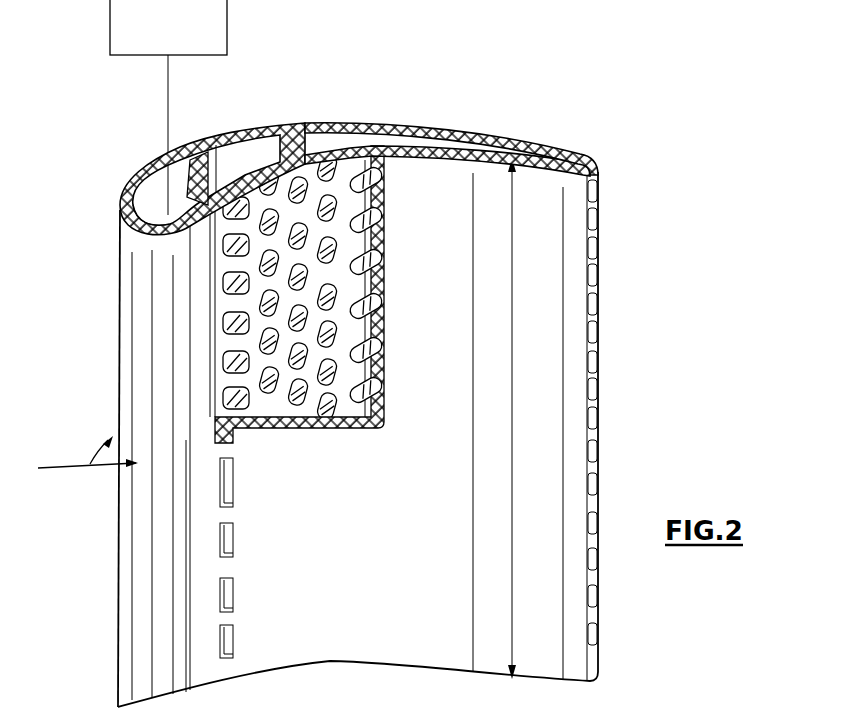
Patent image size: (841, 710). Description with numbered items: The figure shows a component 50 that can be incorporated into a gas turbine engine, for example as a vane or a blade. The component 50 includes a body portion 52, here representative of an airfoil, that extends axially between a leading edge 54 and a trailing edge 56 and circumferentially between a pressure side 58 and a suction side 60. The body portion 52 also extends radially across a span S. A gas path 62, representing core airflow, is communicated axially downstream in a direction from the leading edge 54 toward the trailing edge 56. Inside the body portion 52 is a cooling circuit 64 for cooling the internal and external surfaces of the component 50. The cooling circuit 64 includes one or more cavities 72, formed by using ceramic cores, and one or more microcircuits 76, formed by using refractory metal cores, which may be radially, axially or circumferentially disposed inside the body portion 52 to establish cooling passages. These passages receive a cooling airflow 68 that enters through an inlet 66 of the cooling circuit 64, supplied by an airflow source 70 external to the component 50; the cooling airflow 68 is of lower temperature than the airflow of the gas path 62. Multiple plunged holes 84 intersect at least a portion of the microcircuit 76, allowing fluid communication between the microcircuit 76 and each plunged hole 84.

The component 50 is at (355, 107).
The body portion 52 is at (572, 220).
The leading edge 54 is at (118, 367).
The trailing edge 56 is at (596, 347).
The pressure side 58 is at (413, 567).
The suction side 60 is at (253, 124).
The gas path 62 is at (70, 468).
The cooling circuit 64 is at (198, 160).
The inlet 66 is at (138, 206).
The cooling airflow 68 is at (168, 90).
The airflow source 70 is at (228, 33).
The cavities 72 is at (165, 190).
The microcircuit 76 is at (322, 265).
The plunged holes 84 is at (233, 480).
The span S is at (514, 406).